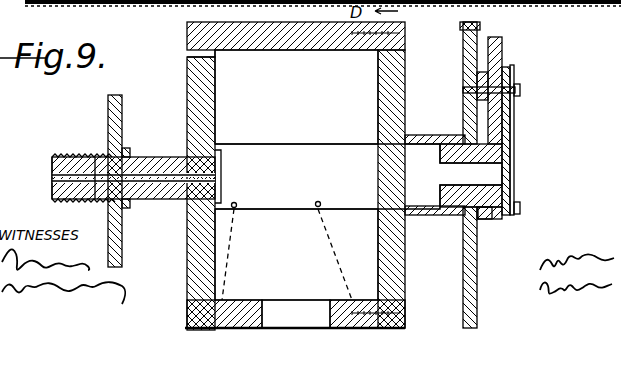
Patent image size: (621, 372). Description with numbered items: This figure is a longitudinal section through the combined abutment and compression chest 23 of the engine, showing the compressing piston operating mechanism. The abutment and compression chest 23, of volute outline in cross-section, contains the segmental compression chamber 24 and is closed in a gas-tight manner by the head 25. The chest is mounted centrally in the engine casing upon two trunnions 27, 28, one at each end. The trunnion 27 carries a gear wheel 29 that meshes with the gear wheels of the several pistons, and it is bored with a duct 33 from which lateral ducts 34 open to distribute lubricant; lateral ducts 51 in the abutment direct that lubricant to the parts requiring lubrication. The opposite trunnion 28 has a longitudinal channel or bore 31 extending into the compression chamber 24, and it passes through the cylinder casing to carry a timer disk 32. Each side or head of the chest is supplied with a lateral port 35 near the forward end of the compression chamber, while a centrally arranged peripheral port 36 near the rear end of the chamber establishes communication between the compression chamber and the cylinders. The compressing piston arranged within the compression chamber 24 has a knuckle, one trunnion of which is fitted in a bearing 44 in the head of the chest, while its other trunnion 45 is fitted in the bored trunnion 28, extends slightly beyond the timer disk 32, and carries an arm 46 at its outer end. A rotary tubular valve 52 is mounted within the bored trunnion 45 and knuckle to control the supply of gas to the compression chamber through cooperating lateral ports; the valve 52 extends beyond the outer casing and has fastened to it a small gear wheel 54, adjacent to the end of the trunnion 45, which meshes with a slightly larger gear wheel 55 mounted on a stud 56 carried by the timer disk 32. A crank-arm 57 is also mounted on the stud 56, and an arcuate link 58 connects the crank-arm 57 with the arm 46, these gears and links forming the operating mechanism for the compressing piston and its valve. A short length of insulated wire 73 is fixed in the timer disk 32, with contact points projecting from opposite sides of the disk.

The combined abutment and compression chest 23 is at (187, 122).
The segmental compression chamber 24 is at (296, 97).
The head 25 is at (405, 90).
The trunnion 27 is at (52, 172).
The trunnion 28 is at (428, 218).
The gear wheel 29 is at (108, 116).
The longitudinal channel or bore 31 is at (358, 176).
The timer disk 32 is at (478, 273).
The duct 33 is at (157, 182).
The lateral ducts 34 is at (100, 164).
The lateral port 35 is at (187, 57).
The peripheral port 36 is at (289, 307).
The bearing 44 is at (220, 184).
The trunnion 45 is at (458, 135).
The arm 46 is at (492, 218).
The lateral ducts 51 is at (240, 250).
The rotary tubular valve 52 is at (498, 192).
The small gear wheel 54 is at (478, 146).
The gear wheel 55 is at (502, 54).
The stud 56 is at (520, 90).
The crank-arm 57 is at (510, 78).
The arcuate link 58 is at (514, 124).
The insulated wire 73 is at (478, 32).